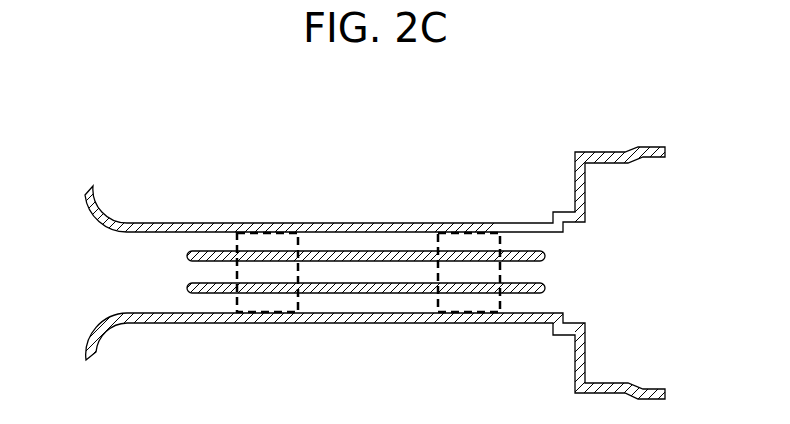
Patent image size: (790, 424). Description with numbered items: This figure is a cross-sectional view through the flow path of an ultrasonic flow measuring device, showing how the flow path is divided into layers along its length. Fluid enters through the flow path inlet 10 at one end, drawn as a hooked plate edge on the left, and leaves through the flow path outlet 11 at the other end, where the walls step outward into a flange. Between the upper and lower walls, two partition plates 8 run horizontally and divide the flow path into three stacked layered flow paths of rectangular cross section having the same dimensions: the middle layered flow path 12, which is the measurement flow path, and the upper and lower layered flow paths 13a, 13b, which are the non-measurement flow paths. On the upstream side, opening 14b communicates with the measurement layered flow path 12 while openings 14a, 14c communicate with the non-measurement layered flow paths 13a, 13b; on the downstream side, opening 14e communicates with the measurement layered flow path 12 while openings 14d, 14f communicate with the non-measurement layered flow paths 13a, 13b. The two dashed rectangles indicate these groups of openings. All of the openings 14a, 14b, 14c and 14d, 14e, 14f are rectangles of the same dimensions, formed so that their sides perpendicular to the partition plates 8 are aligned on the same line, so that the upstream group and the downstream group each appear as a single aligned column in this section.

The partition plates 8 is at (545, 256).
The flow path inlet 10 is at (127, 223).
The flow path outlet 11 is at (603, 152).
The layered flow path 12 is at (402, 272).
The layered flow path 13a is at (422, 242).
The layered flow path 13b is at (418, 303).
The opening 14a is at (272, 240).
The opening 14b is at (252, 270).
The opening 14c is at (255, 302).
The opening 14d is at (465, 243).
The opening 14e is at (475, 272).
The opening 14f is at (458, 300).